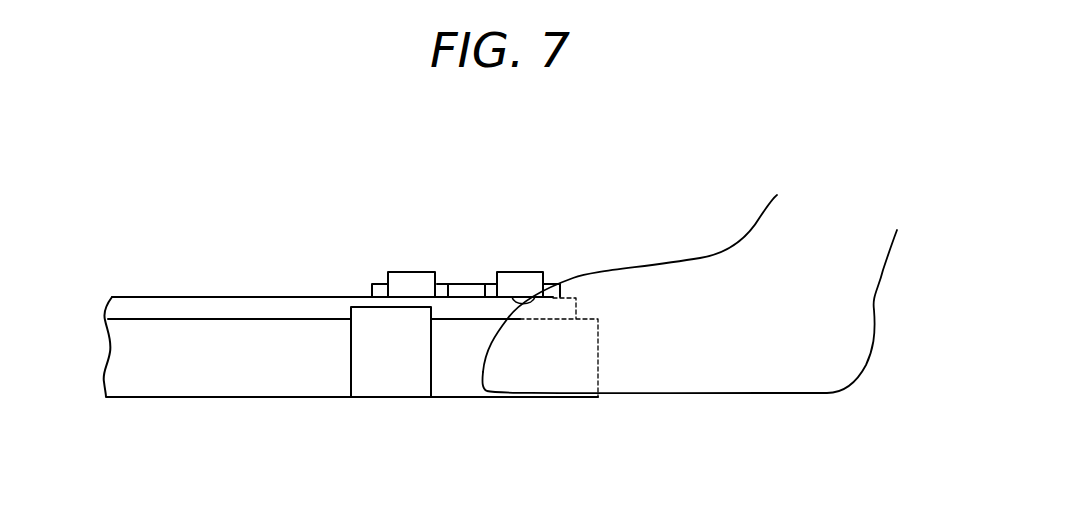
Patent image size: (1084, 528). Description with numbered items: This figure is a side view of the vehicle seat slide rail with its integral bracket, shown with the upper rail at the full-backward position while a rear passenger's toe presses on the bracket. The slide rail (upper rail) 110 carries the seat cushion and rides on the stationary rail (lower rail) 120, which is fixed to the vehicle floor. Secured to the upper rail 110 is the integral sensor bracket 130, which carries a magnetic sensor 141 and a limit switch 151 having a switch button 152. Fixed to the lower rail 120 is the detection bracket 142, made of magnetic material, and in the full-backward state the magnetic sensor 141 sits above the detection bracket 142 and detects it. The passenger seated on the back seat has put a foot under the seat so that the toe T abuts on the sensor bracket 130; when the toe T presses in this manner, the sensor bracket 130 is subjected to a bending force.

The slide rail (upper rail) 110 is at (225, 297).
The stationary rail (lower rail) 120 is at (265, 383).
The sensor bracket 130 is at (469, 284).
The magnetic sensor 141 is at (411, 272).
The detection bracket 142 is at (385, 387).
The limit switch 151 is at (531, 272).
The switch button 152 is at (522, 303).
The toe T is at (587, 307).